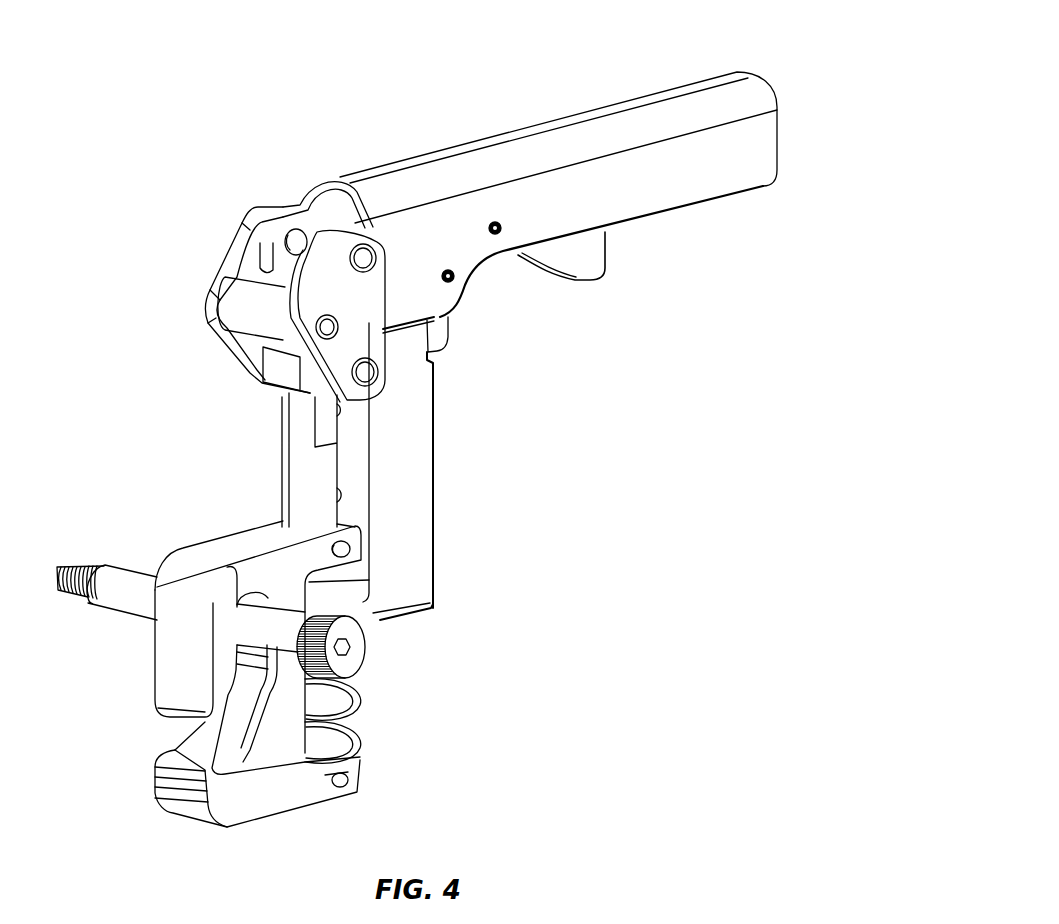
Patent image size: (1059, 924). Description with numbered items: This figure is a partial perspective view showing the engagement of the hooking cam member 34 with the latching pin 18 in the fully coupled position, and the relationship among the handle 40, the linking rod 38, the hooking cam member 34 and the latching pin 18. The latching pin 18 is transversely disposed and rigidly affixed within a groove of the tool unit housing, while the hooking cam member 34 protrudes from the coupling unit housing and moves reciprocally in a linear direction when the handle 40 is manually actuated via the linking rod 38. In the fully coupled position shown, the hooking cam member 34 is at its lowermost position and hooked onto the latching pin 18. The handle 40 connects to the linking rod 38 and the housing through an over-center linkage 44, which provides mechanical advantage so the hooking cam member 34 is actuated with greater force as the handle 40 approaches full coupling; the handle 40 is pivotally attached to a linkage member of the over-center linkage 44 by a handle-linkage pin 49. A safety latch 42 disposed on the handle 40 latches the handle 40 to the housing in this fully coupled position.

The latching pin 18 is at (128, 585).
The hooking cam member 34 is at (284, 793).
The linking rod 38 is at (310, 481).
The handle 40 is at (658, 115).
The safety latch 42 is at (575, 262).
The over-center linkage 44 is at (206, 250).
The handle-linkage pin 49 is at (367, 250).